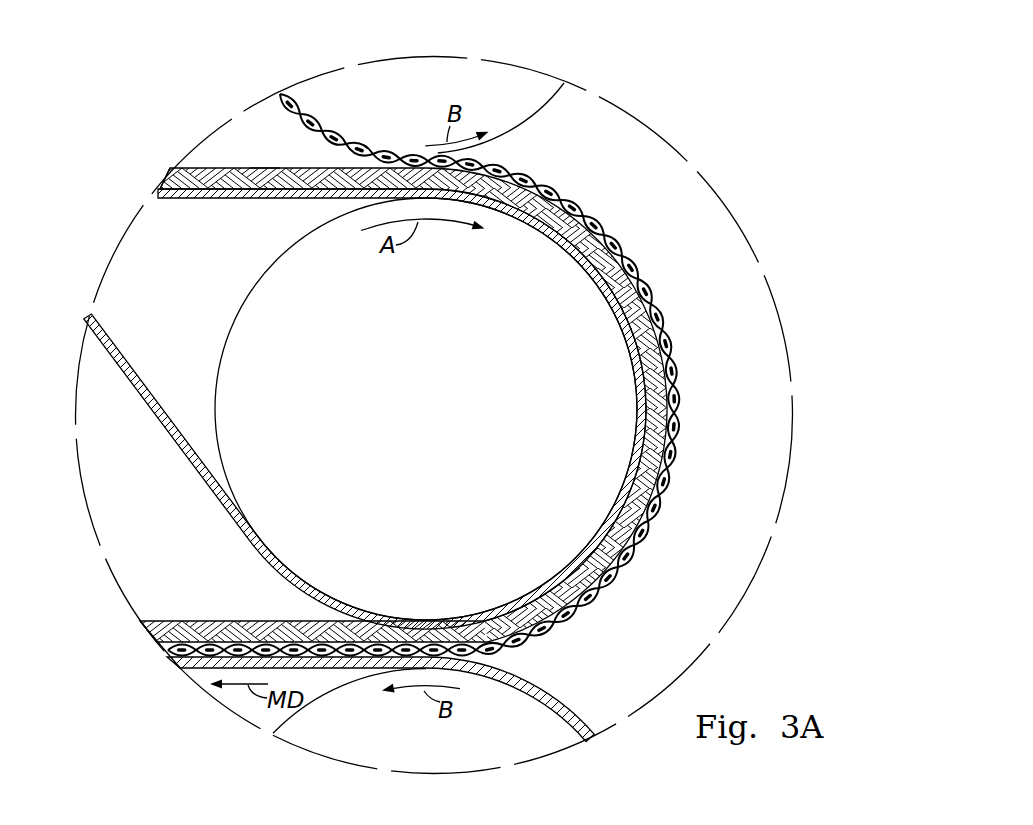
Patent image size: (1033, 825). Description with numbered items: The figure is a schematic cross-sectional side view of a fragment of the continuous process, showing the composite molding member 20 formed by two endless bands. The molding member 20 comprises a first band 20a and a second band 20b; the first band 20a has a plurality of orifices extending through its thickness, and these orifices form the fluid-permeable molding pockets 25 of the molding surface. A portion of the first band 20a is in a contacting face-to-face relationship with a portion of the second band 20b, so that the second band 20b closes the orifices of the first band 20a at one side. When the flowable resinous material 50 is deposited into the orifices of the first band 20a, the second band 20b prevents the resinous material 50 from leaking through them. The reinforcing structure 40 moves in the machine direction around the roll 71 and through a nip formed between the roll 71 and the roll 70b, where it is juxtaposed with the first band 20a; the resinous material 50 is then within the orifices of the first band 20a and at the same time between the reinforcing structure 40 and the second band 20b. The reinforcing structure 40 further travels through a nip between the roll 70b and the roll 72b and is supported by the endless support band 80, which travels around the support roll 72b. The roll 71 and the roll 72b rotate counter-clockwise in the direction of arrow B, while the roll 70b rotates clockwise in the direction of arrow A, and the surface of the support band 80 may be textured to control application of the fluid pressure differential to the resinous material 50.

The molding member 20 is at (372, 371).
The first band 20a is at (241, 166).
The second band 20b is at (218, 194).
The molding pockets 25 is at (265, 157).
The reinforcing structure 40 is at (279, 90).
The flowable resinous material 50 is at (204, 170).
The roll 70b is at (437, 459).
The roll 71 is at (402, 121).
The roll 72b is at (520, 752).
The support band 80 is at (537, 692).